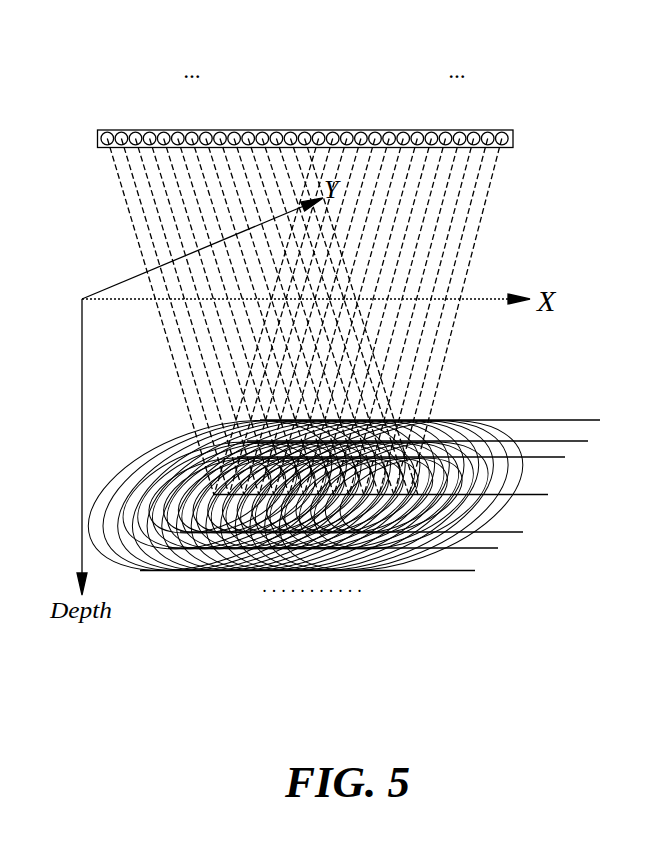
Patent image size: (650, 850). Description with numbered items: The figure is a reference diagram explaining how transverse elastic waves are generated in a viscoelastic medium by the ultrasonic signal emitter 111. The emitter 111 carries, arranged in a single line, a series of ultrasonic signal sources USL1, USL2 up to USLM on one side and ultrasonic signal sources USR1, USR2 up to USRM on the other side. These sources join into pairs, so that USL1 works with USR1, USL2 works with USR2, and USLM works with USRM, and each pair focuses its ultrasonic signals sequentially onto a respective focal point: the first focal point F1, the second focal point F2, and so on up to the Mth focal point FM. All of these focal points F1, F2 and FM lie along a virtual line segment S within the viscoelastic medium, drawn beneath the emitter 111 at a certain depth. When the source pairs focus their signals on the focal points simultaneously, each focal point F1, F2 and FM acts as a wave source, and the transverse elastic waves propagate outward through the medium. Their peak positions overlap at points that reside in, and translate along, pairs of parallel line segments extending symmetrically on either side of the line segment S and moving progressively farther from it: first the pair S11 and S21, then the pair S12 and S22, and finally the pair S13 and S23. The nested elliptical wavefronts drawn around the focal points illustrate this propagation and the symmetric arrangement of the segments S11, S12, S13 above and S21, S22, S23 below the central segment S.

The ultrasonic signal emitter 111 is at (304, 130).
The ultrasonic signal source USL1 is at (110, 130).
The ultrasonic signal source USL2 is at (119, 130).
The ultrasonic signal source USLM is at (293, 130).
The ultrasonic signal source USR1 is at (317, 130).
The ultrasonic signal source USR2 is at (331, 130).
The ultrasonic signal source USRM is at (503, 130).
The first focal point F1 is at (210, 497).
The second focal point F2 is at (226, 497).
The Mth focal point FM is at (401, 497).
The virtual line segment S is at (389, 494).
The parallel line segment S11 is at (415, 458).
The parallel line segment S12 is at (432, 441).
The parallel line segment S13 is at (446, 421).
The parallel line segment S21 is at (366, 532).
The parallel line segment S22 is at (348, 549).
The parallel line segment S23 is at (322, 572).